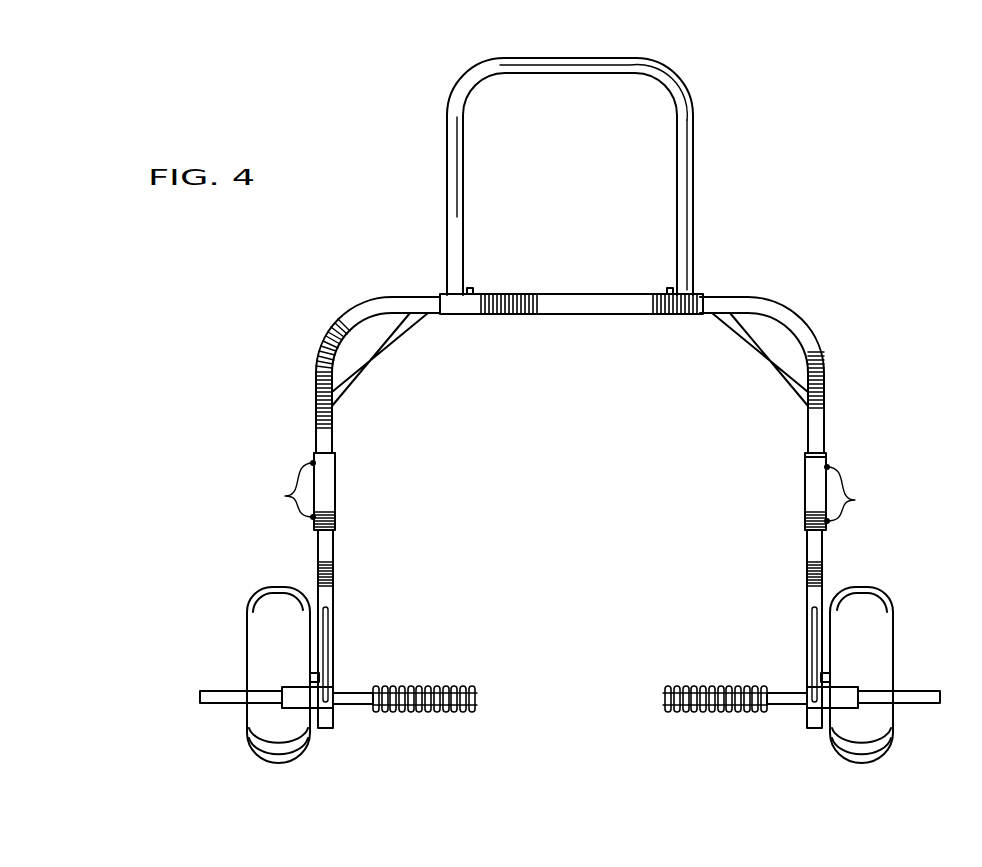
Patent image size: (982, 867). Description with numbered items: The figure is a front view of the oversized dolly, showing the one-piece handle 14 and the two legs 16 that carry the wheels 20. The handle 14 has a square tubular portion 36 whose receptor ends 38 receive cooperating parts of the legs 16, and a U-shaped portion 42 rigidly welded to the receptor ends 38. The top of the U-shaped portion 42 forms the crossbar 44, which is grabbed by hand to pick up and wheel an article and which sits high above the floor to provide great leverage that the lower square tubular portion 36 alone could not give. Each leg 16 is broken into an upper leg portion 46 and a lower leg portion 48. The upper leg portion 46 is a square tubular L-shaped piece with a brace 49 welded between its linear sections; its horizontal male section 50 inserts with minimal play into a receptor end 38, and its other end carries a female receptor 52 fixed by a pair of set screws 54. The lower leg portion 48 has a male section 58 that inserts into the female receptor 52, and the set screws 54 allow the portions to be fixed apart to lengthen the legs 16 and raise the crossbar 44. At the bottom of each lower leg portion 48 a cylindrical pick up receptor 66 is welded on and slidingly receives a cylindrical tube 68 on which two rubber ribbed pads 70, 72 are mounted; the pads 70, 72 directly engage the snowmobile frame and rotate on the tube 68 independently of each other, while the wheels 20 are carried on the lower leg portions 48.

The handle 14 is at (695, 215).
The legs 16 is at (280, 466).
The wheels 20 is at (248, 640).
The square tubular portion 36 is at (567, 316).
The receptor ends 38 is at (448, 316).
The U-shaped portion 42 is at (694, 166).
The crossbar 44 is at (597, 56).
The upper leg portion 46 is at (321, 330).
The lower leg portion 48 is at (806, 540).
The brace 49 is at (374, 356).
The male section 50 is at (434, 292).
The female receptor 52 is at (337, 478).
The set screws 54 is at (285, 496).
The male section 58 is at (337, 536).
The pick up receptor 66 is at (300, 688).
The cylindrical tube 68 is at (228, 706).
The ribbed pad 70 is at (452, 686).
The ribbed pad 72 is at (413, 712).